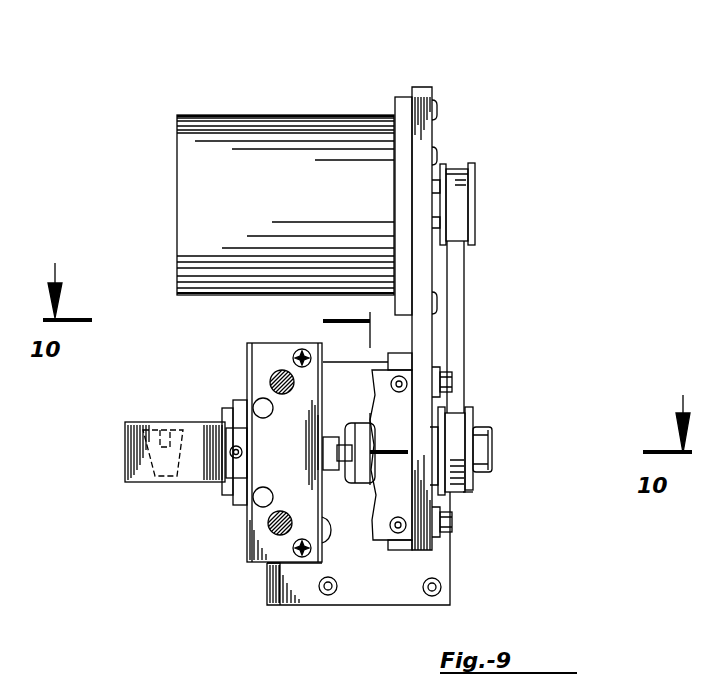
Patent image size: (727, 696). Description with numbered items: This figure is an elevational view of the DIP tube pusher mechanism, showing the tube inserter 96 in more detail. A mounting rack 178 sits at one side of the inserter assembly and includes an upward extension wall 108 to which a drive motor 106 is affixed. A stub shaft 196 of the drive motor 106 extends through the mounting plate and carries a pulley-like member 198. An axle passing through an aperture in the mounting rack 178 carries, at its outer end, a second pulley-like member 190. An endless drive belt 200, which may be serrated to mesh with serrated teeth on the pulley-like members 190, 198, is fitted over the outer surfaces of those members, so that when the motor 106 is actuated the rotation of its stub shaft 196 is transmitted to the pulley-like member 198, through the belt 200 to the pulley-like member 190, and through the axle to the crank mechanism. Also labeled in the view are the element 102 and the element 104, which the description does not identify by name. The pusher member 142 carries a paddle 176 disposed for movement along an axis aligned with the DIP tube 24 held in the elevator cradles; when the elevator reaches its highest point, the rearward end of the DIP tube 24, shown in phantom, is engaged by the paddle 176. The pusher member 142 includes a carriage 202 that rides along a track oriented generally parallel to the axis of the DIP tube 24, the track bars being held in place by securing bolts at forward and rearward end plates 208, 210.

The DIP tube 24 is at (155, 470).
The tube inserter 96 is at (500, 344).
The drive shaft 102 is at (493, 449).
The drive belt 104 is at (478, 237).
The drive motor 106 is at (240, 132).
The upward extension wall 108 is at (416, 86).
The pusher member 142 is at (208, 482).
The paddle 176 is at (197, 440).
The mounting rack 178 is at (422, 328).
The pulley-like member 190 is at (470, 490).
The stub shaft 196 is at (437, 178).
The pulley-like member 198 is at (476, 196).
The endless drive belt 200 is at (460, 408).
The carriage 202 is at (268, 583).
The forward end plate 208 is at (385, 515).
The rearward end plate 210 is at (342, 597).